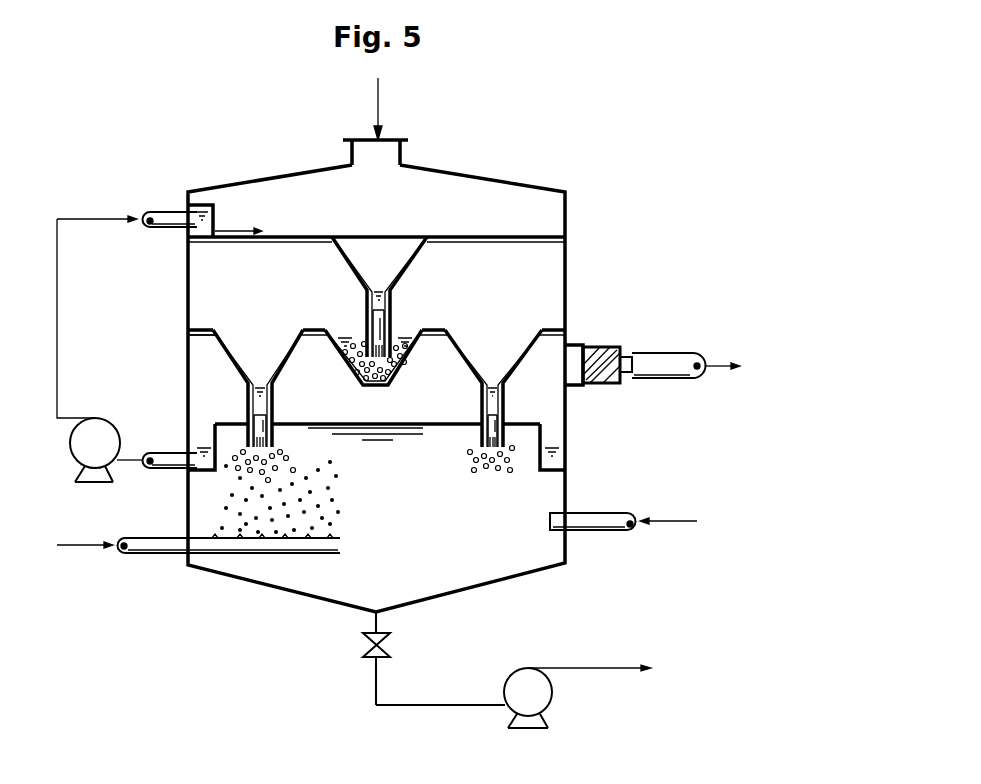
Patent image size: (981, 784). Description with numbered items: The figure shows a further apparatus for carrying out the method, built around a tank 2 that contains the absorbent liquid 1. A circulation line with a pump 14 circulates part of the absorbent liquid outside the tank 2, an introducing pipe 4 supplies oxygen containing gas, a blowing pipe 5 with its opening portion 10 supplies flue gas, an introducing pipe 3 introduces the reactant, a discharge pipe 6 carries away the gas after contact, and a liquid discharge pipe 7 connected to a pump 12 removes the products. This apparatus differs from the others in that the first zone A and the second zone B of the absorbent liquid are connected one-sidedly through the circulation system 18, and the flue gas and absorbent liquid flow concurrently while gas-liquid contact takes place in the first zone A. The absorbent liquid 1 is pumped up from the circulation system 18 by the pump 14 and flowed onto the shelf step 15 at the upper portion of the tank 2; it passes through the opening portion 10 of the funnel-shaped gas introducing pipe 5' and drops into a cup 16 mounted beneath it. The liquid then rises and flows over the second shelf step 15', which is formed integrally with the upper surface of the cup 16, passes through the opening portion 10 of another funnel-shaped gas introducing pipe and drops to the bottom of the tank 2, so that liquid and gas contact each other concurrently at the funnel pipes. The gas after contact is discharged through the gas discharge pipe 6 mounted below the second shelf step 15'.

The absorbent liquid 1 is at (385, 507).
The tank 2 is at (568, 272).
The introducing pipe 3 is at (612, 510).
The introducing pipe 4 is at (158, 555).
The blowing pipe 5 is at (402, 121).
The gas introducing pipe 5' is at (398, 297).
The gas discharge pipe 6 is at (667, 357).
The liquid discharge pipe 7 is at (376, 622).
The opening portion 10 is at (390, 337).
The pump 12 is at (513, 668).
The pump 14 is at (110, 425).
The shelf step 15 is at (174, 238).
The second shelf step 15' is at (175, 350).
The cup 16 is at (353, 372).
The circulation system 18 is at (57, 323).
The first zone A is at (348, 335).
The second zone B is at (270, 512).